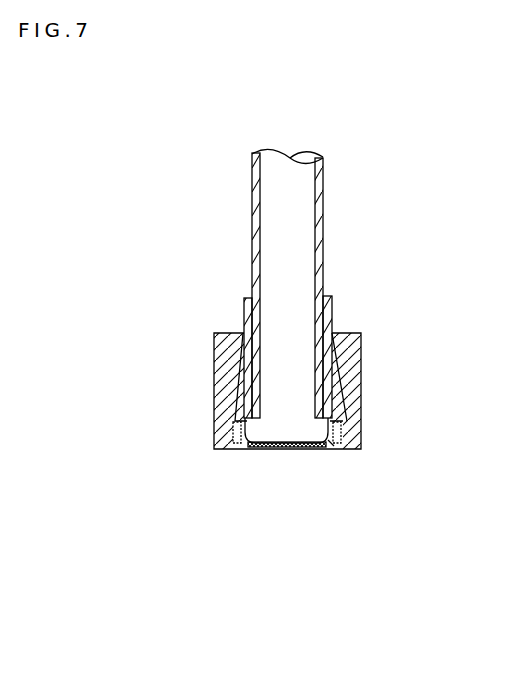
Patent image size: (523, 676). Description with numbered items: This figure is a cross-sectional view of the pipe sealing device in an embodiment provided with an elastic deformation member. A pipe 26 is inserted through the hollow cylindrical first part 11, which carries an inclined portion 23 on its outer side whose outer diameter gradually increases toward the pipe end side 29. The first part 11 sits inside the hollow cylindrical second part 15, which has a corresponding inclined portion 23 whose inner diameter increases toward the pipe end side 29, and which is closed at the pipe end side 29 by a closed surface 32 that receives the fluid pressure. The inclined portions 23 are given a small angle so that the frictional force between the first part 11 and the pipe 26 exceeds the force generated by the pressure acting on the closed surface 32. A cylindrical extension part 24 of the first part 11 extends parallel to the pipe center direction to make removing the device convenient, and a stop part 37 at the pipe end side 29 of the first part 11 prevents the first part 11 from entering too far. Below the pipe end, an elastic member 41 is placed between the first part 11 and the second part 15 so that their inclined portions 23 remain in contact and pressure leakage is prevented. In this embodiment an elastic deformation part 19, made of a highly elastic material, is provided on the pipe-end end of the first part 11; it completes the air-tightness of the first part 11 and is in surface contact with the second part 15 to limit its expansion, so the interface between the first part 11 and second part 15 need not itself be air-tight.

The second part 15 is at (183, 383).
The pipe end side 29 is at (330, 400).
The pipe 26 is at (220, 210).
The cylindrical extension part 24 is at (228, 302).
The inclined portion 23 is at (340, 360).
The stop part 37 is at (252, 442).
The closed surface 32 is at (295, 472).
The first part 11 is at (238, 407).
The elastic member 41 is at (343, 432).
The elastic deformation part 19 is at (340, 447).